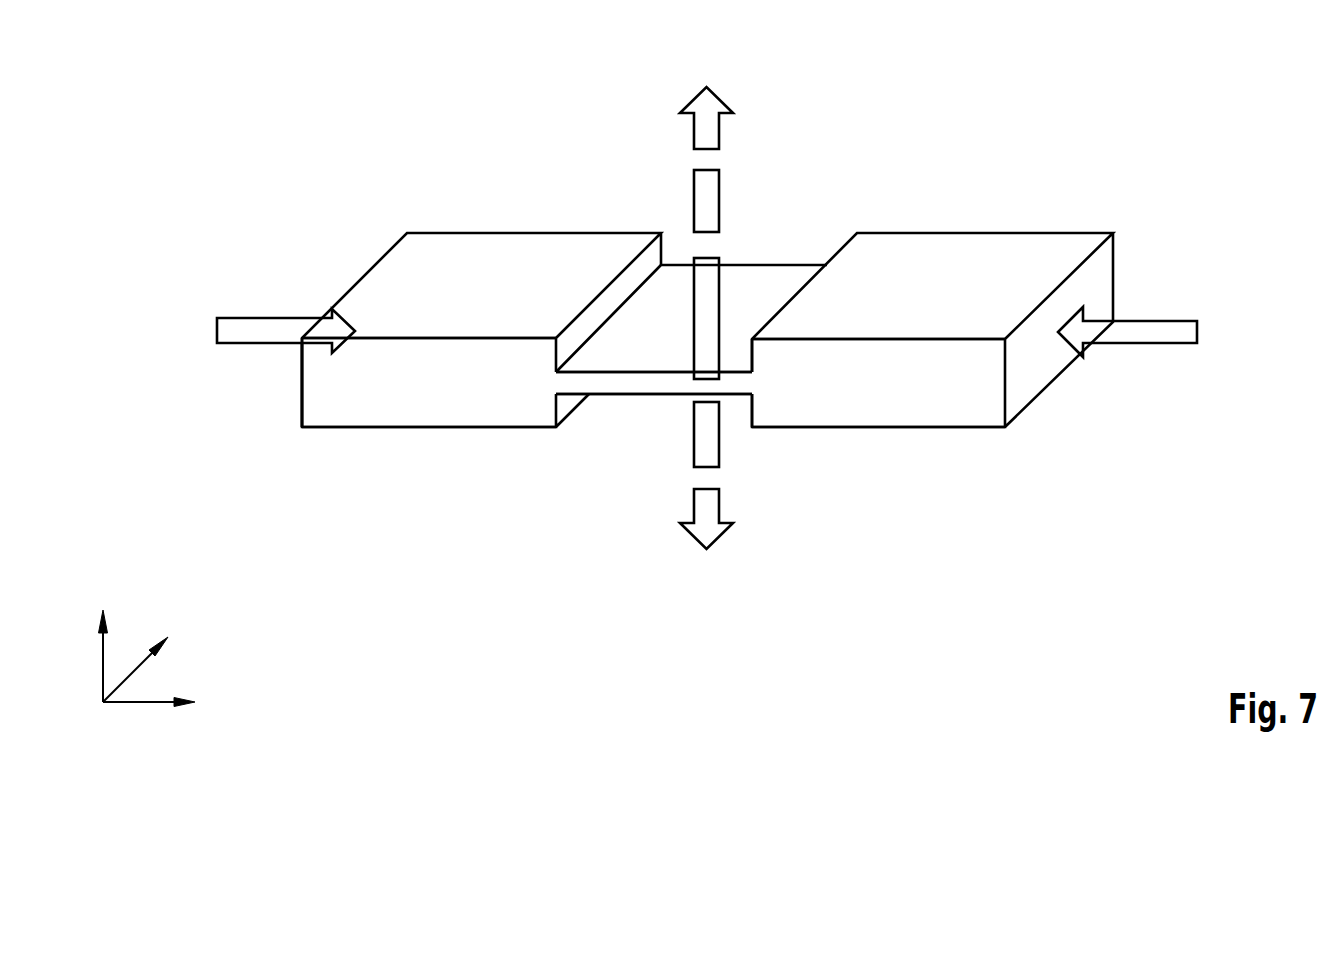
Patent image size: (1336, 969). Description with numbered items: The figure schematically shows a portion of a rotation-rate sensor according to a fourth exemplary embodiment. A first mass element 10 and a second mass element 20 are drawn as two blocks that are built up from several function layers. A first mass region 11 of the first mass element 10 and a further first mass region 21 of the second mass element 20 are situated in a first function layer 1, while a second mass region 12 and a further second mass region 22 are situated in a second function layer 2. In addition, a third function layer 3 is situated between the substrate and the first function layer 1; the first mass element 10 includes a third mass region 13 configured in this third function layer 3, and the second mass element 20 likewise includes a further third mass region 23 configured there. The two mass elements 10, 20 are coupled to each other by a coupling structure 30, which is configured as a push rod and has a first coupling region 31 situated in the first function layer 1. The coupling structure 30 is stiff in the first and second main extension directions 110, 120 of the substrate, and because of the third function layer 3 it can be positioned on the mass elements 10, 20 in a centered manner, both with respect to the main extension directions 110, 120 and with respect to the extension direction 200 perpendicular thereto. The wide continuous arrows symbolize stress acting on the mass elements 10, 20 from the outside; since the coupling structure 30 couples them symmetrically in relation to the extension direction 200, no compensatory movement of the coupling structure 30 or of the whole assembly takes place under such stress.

The first mass element 10 is at (508, 257).
The first mass region 11 is at (397, 383).
The second mass region 12 is at (448, 353).
The third mass region 13 is at (352, 415).
The first function layer 1 is at (297, 371).
The second function layer 2 is at (297, 342).
The third function layer 3 is at (297, 424).
The second mass element 20 is at (958, 258).
The further first mass region 21 is at (847, 385).
The further second mass region 22 is at (898, 355).
The further third mass region 23 is at (800, 417).
The coupling structure 30 is at (627, 363).
The first coupling region 31 is at (615, 433).
The first main extension direction 110 is at (202, 714).
The second main extension direction 120 is at (192, 631).
The extension direction 200 is at (83, 606).